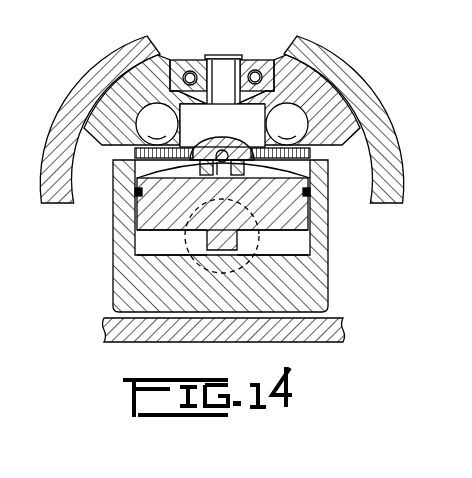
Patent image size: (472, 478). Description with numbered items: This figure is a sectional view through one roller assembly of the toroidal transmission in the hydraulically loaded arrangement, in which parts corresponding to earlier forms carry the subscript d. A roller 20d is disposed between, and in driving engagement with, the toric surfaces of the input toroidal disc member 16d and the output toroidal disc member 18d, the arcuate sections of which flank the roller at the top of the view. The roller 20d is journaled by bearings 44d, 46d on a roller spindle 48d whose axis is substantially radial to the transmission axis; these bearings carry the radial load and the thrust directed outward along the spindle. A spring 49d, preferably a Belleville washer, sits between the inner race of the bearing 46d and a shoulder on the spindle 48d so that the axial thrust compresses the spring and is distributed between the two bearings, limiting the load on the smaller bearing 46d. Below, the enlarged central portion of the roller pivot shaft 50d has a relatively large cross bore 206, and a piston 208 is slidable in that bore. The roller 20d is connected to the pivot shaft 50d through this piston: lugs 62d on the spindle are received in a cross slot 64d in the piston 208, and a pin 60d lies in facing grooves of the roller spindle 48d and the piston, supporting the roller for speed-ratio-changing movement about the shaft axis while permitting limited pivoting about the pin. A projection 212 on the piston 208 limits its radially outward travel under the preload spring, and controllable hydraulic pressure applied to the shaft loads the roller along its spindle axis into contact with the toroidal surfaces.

The input toroidal disc member 16d is at (103, 66).
The output toroidal disc member 18d is at (333, 68).
The roller 20d is at (163, 62).
The bearing 44d is at (302, 132).
The bearing 46d is at (255, 70).
The roller spindle 48d is at (257, 127).
The spring 49d is at (172, 86).
The roller pivot shaft 50d is at (313, 291).
The pin 60d is at (222, 141).
The lugs 62d is at (217, 174).
The cross slot 64d is at (282, 172).
The cross bore 206 is at (310, 242).
The piston 208 is at (196, 209).
The projection 212 is at (207, 240).